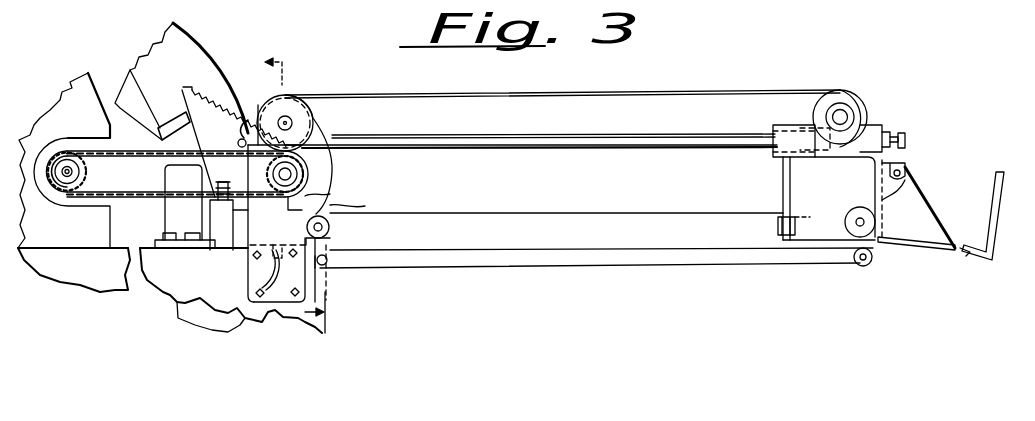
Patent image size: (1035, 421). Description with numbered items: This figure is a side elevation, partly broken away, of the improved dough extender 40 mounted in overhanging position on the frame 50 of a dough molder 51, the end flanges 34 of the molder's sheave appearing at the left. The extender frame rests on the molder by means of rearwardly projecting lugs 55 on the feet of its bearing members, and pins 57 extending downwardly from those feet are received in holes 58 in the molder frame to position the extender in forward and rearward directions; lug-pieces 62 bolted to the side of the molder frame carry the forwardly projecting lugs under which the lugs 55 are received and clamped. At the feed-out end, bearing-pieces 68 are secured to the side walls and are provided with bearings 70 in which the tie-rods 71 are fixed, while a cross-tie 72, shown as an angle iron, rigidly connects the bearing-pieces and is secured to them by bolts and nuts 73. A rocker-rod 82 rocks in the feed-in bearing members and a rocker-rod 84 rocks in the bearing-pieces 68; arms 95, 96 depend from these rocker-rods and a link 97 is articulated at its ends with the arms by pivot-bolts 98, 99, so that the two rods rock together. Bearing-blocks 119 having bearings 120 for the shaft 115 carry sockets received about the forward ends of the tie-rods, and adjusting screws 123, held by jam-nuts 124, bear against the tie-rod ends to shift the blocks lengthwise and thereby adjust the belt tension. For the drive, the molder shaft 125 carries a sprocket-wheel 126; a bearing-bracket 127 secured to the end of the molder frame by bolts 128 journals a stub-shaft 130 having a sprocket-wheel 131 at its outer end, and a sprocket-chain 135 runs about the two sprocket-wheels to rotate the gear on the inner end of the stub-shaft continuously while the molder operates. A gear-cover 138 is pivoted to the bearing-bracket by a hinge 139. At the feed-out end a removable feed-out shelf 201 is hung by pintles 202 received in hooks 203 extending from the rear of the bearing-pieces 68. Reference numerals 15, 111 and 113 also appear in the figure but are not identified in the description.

The section line 15 is at (284, 194).
The end flanges 34 is at (195, 50).
The dough extender 40 is at (608, 89).
The molder frame 50 is at (168, 296).
The dough molder 51 is at (102, 280).
The rearwardly projecting lugs 55 is at (225, 244).
The pins 57 is at (252, 262).
The holes 58 is at (252, 292).
The lug-pieces 62 is at (167, 217).
The bearing-pieces 68 is at (795, 183).
The bearings 70 is at (782, 127).
The tie-rods 71 is at (566, 138).
The cross-tie 72 is at (777, 223).
The bolts and nuts 73 is at (777, 230).
The rocker-rod 82 is at (337, 226).
The rocker-rod 84 is at (845, 222).
The depending arm 95 is at (330, 243).
The depending arm 96 is at (870, 266).
The link 97 is at (687, 263).
The pivot-bolt 98 is at (325, 268).
The pivot-bolt 99 is at (862, 259).
The frame 111 is at (677, 89).
The pulley 113 is at (815, 106).
The shaft 115 is at (843, 110).
The bearing-blocks 119 is at (876, 132).
The bearings 120 is at (876, 123).
The adjusting screws 123 is at (904, 138).
The jam-nuts 124 is at (903, 132).
The shaft 125 is at (67, 164).
The sprocket-wheel 126 is at (80, 169).
The bearing-bracket 127 is at (556, 207).
The bolts 128 is at (325, 293).
The stub-shaft 130 is at (330, 176).
The sprocket-wheel 131 is at (328, 195).
The sprocket-chain 135 is at (145, 150).
The gear-cover 138 is at (315, 123).
The hinge 139 is at (248, 128).
The feed-out shelf 201 is at (918, 250).
The pintles 202 is at (898, 164).
The hooks 203 is at (910, 172).